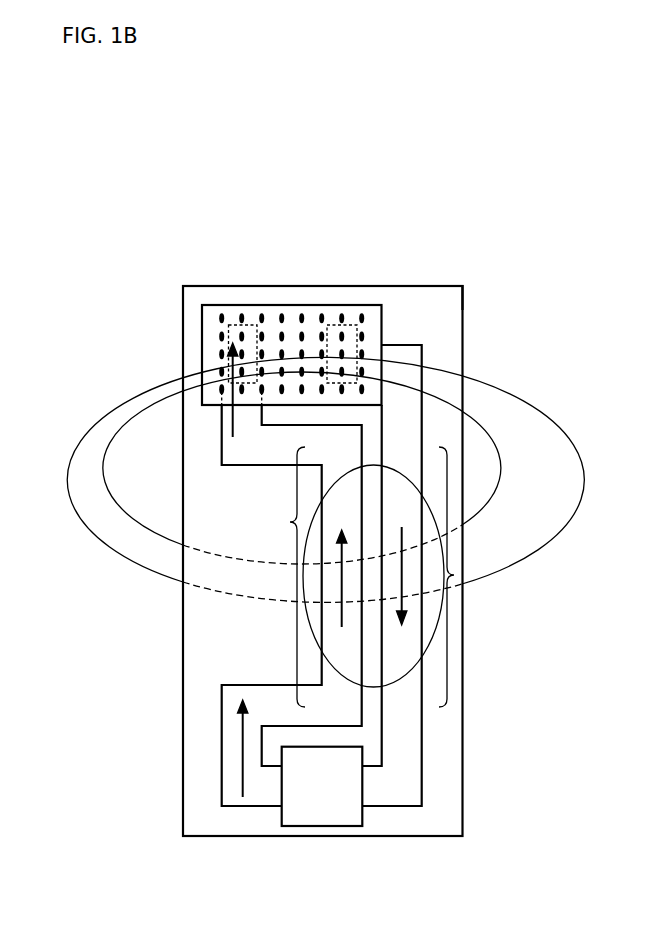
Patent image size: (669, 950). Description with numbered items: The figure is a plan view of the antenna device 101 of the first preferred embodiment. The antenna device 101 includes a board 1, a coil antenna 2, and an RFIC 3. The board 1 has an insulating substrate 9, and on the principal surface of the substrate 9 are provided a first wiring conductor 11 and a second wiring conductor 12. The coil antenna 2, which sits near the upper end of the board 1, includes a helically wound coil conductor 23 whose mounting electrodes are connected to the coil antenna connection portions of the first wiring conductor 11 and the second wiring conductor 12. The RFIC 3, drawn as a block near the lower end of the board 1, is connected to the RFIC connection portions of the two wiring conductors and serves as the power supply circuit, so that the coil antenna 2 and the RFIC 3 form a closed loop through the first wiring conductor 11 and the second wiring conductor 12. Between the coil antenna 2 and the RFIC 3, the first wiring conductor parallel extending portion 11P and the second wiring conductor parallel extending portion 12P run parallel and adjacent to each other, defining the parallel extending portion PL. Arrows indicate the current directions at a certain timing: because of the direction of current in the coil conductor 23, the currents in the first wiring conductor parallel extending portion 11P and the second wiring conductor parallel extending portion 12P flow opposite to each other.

The antenna device 101 is at (284, 201).
The board 1 is at (470, 311).
The insulating substrate 9 is at (453, 295).
The coil antenna 2 is at (216, 301).
The coil conductor 23 is at (308, 314).
The first wiring conductor 11 is at (240, 452).
The second wiring conductor 12 is at (408, 412).
The first wiring conductor parallel extending portion 11P is at (272, 577).
The second wiring conductor parallel extending portion 12P is at (454, 575).
The parallel extending portion PL is at (428, 643).
The RFIC 3 is at (323, 806).